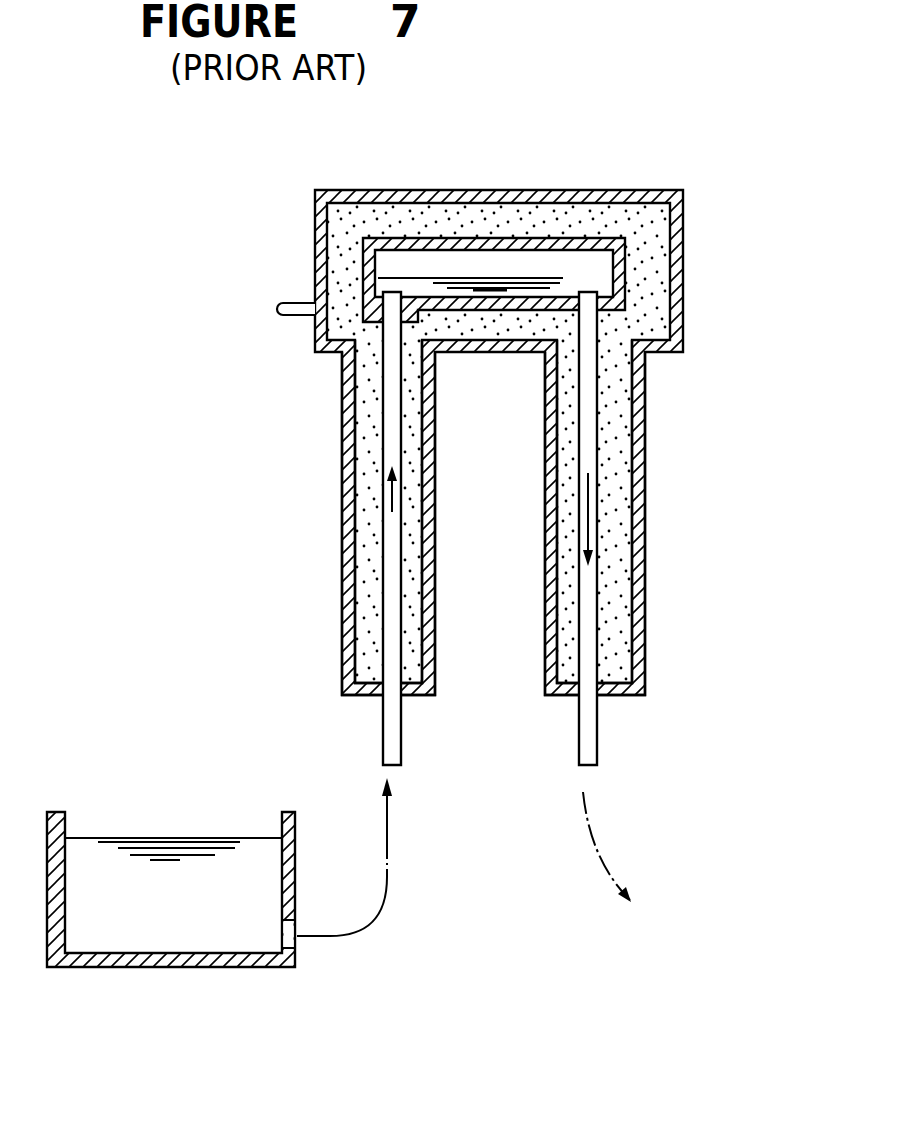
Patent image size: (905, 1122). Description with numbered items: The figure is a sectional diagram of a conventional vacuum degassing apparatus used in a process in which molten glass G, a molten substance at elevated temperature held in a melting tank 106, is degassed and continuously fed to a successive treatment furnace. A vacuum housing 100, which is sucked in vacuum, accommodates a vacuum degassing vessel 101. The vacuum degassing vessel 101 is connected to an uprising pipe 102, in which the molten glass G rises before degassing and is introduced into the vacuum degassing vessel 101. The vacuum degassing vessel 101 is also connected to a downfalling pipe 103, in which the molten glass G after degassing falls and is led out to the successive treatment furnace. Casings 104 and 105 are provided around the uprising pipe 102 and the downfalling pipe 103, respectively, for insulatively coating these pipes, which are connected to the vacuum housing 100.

The vacuum housing 100 is at (683, 246).
The vacuum degassing vessel 101 is at (530, 238).
The uprising pipe 102 is at (383, 568).
The downfalling pipe 103 is at (597, 598).
The casing 104 is at (343, 441).
The casing 105 is at (634, 455).
The melting tank 106 is at (297, 838).
The molten glass G is at (456, 278).